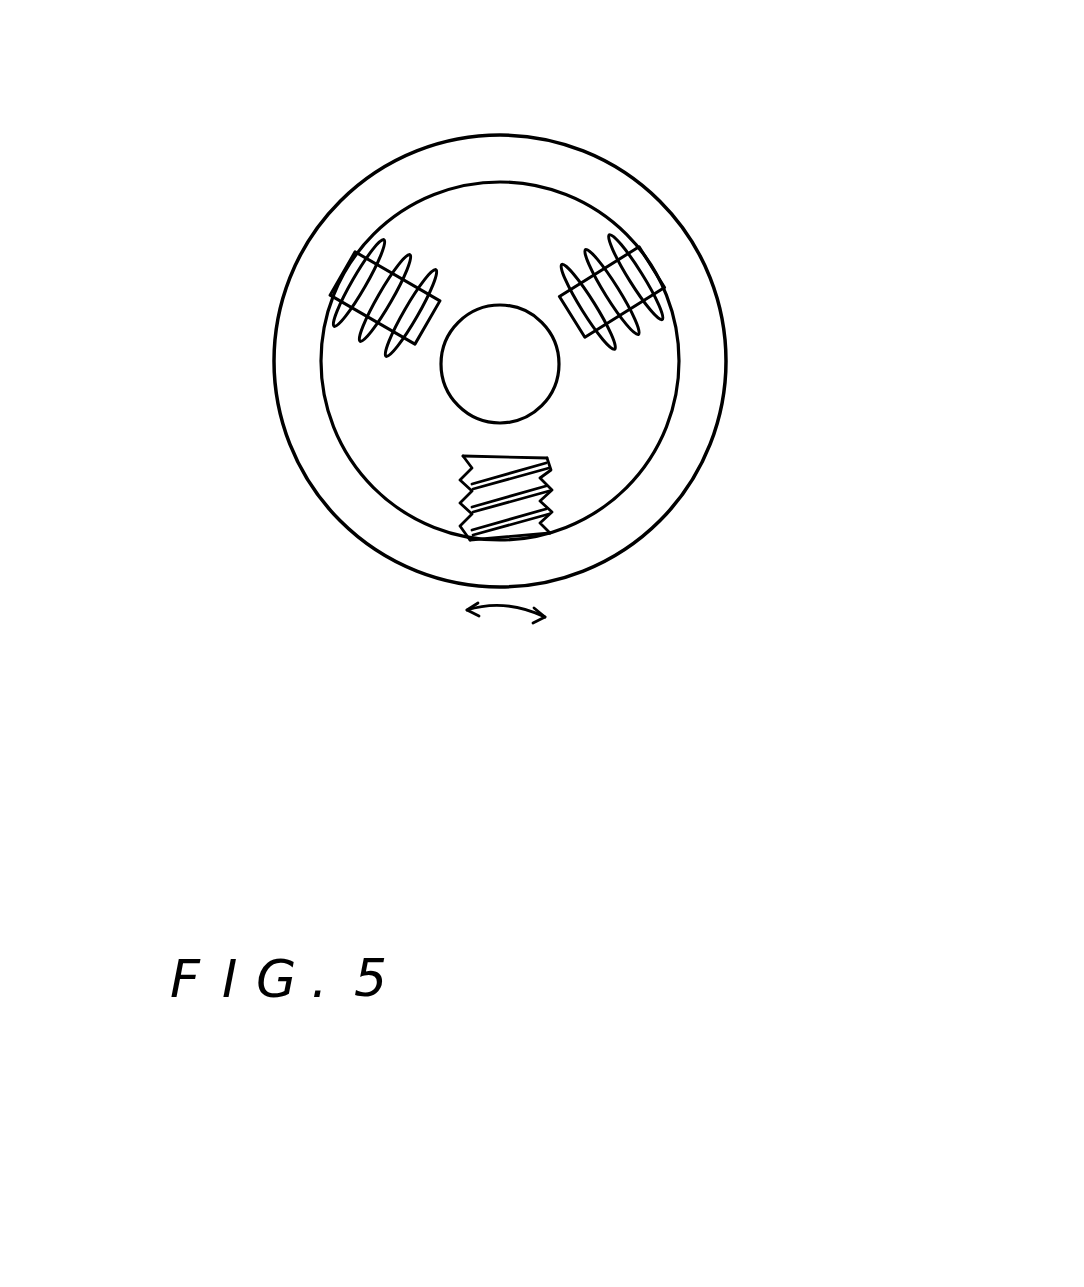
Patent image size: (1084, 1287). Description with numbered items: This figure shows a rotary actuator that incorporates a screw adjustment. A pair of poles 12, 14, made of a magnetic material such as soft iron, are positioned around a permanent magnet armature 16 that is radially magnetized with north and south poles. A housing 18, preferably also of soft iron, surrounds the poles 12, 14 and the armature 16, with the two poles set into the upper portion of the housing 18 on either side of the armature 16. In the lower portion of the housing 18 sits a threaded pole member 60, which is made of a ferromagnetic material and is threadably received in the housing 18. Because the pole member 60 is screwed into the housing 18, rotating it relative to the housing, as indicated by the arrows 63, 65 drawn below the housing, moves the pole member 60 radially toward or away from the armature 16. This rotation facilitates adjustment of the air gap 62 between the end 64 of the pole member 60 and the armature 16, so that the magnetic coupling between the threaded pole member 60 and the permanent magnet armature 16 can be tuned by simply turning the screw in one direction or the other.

The pole 12 is at (347, 280).
The pole 14 is at (648, 262).
The armature 16 is at (540, 363).
The housing 18 is at (556, 188).
The threaded pole member 60 is at (543, 490).
The air gap 62 is at (513, 437).
The arrow 63 is at (467, 610).
The end of the pole member 64 is at (470, 457).
The arrow 65 is at (553, 633).